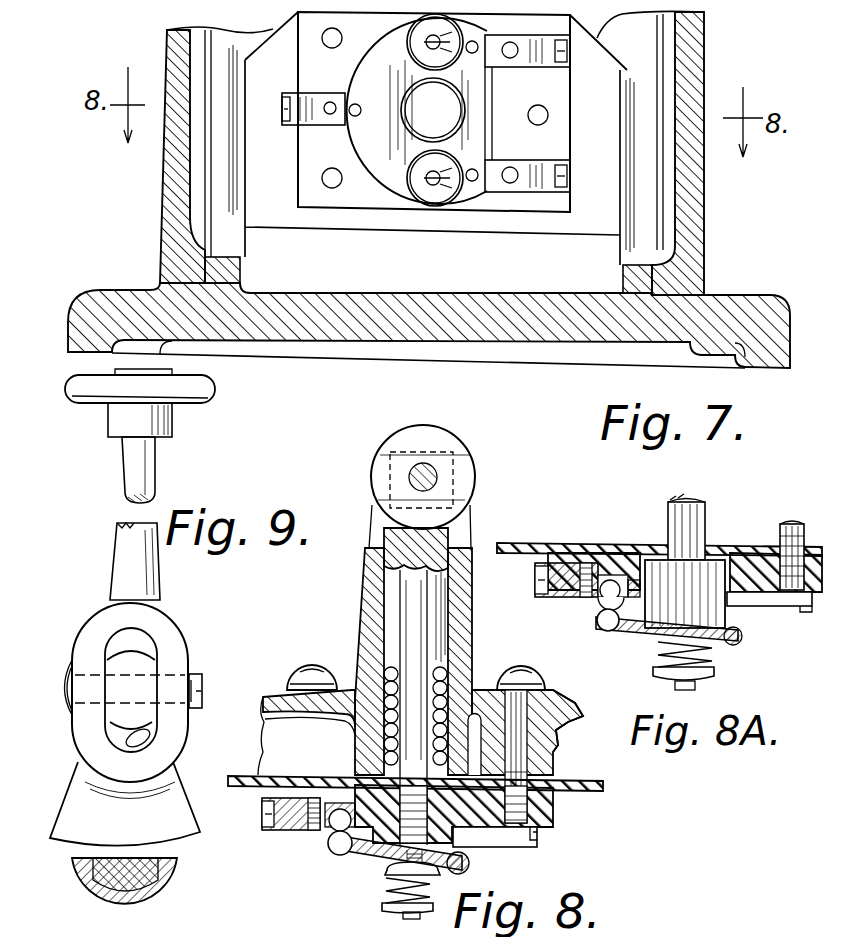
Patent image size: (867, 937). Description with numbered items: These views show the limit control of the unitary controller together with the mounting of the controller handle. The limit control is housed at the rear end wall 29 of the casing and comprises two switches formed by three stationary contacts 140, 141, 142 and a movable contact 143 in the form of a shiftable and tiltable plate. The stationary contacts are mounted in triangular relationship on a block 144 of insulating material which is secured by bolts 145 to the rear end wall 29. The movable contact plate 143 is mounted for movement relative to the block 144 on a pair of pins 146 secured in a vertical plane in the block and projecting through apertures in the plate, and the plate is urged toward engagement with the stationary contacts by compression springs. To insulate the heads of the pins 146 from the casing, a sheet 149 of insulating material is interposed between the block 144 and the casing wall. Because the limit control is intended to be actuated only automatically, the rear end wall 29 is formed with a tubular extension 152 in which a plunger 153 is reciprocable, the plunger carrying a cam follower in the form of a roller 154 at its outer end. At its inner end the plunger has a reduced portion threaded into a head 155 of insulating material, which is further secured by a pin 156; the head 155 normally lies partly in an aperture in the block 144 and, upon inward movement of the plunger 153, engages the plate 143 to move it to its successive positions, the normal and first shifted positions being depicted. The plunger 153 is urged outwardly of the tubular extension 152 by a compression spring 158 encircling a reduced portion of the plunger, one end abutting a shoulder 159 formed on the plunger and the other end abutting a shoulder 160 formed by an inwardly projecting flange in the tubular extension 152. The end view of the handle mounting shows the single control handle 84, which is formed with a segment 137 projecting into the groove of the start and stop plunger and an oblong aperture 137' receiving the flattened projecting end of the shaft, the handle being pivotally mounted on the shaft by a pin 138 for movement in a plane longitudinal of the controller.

In FIG. 8, the rear end wall 29 is at (280, 696).
In FIG. 9, the control handle 84 is at (157, 478).
In FIG. 9, the segment 137 is at (103, 867).
In FIG. 9, the oblong aperture 137' is at (174, 701).
In FIG. 9, the pin 138 is at (195, 680).
In FIG. 7, the stationary contact 140 is at (318, 118).
In FIG. 8, the stationary contact 140 is at (294, 828).
In FIG. 8A, the stationary contact 140 is at (565, 600).
In FIG. 7, the stationary contact 141 is at (497, 158).
In FIG. 8, the stationary contact 141 is at (517, 842).
In FIG. 8A, the stationary contact 141 is at (769, 603).
In FIG. 7, the stationary contact 142 is at (500, 70).
In FIG. 7, the movable contact plate 143 is at (377, 63).
In FIG. 8, the movable contact plate 143 is at (373, 868).
In FIG. 8A, the movable contact plate 143 is at (637, 632).
In FIG. 7, the block 144 is at (347, 196).
In FIG. 8, the block 144 is at (553, 800).
In FIG. 8, the bolts 145 is at (553, 748).
In FIG. 7, the pins 146 is at (420, 16).
In FIG. 7, the sheet of insulating material 149 is at (277, 222).
In FIG. 8, the tubular extension 152 is at (365, 615).
In FIG. 8, the plunger 153 is at (400, 582).
In FIG. 8, the roller 154 is at (433, 431).
In FIG. 8, the head 155 is at (453, 838).
In FIG. 8A, the head 155 is at (680, 580).
In FIG. 8, the pin 156 is at (377, 846).
In FIG. 8, the compression spring 158 is at (471, 666).
In FIG. 8, the shoulder 159 is at (336, 668).
In FIG. 8, the shoulder 160 is at (450, 766).